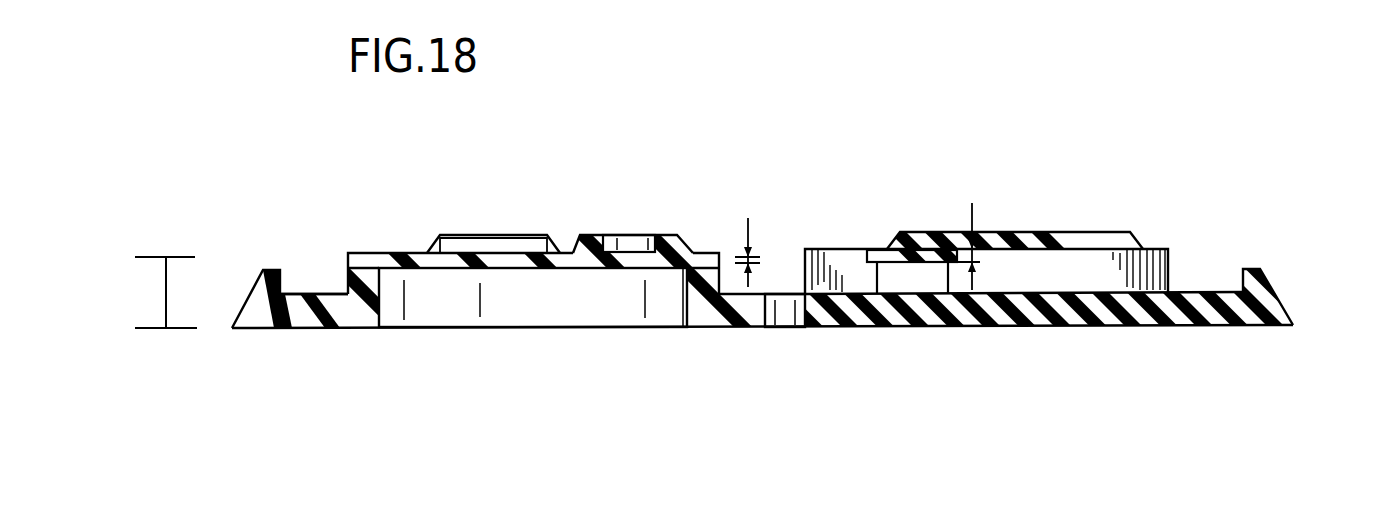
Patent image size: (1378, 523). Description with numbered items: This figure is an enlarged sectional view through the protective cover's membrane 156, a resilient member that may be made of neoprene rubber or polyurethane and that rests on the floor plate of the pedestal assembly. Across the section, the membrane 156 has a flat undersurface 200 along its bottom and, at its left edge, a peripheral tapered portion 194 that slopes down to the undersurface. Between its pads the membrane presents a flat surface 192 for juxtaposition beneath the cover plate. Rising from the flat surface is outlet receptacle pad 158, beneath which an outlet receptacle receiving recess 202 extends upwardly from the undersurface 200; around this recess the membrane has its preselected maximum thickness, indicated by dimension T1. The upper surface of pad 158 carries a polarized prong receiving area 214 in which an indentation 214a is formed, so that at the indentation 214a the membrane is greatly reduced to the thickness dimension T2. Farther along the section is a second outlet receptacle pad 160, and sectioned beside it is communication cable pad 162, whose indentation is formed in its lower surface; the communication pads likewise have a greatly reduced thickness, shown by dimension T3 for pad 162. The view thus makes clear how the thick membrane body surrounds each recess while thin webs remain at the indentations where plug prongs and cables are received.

The membrane 156 is at (1256, 242).
The outlet receptacle pad 158 is at (382, 255).
The outlet receptacle pad 160 is at (1118, 232).
The communication cable pad 162 is at (913, 255).
The flat surface 192 is at (318, 293).
The peripheral tapered portion 194 is at (250, 292).
The flat undersurface 200 is at (330, 330).
The outlet receptacle receiving recess 202 is at (533, 297).
The polarized prong receiving area 214 is at (593, 235).
The indentation 214a is at (627, 240).
The maximum thickness dimension T1 is at (165, 290).
The reduced thickness dimension T2 is at (762, 262).
The reduced thickness dimension T3 is at (978, 258).